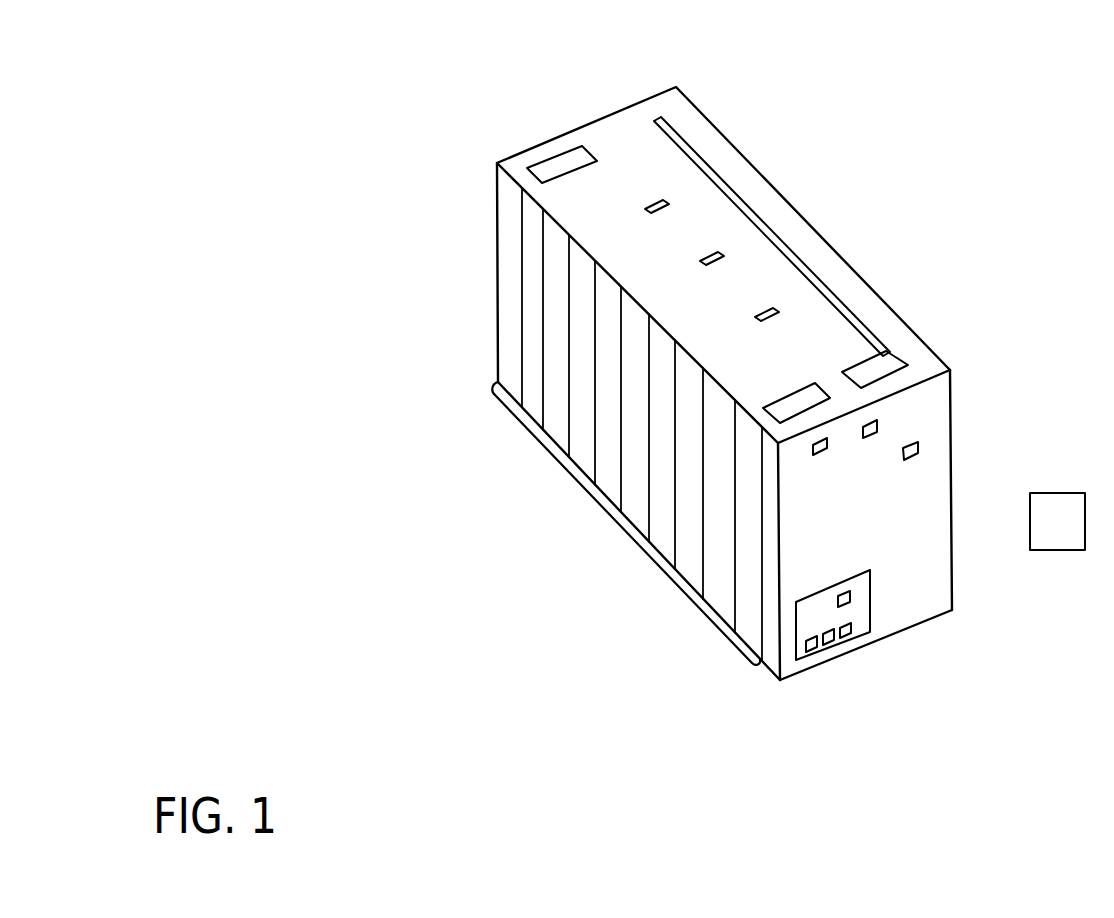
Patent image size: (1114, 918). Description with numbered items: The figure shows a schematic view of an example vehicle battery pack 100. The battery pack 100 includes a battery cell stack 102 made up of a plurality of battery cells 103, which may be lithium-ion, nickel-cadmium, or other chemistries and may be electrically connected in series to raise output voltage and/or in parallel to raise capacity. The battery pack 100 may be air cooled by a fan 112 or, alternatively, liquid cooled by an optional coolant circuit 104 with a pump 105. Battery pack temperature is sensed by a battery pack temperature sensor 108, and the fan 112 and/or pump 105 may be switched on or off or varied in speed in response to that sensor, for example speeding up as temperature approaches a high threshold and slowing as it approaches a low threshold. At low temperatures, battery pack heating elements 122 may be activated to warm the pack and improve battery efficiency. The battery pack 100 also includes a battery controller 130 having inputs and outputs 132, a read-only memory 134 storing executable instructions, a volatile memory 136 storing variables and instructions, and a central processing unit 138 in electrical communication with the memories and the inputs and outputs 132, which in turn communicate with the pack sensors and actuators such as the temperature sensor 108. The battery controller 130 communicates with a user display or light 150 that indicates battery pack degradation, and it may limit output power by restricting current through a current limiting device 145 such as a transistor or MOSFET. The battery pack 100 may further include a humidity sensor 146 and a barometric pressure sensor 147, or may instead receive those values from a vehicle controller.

The battery pack 100 is at (396, 64).
The battery cell stack 102 is at (612, 531).
The battery cells 103 is at (555, 312).
The coolant circuit 104 is at (830, 278).
The pump 105 is at (872, 357).
The battery pack temperature sensor 108 is at (654, 199).
The fan 112 is at (797, 392).
The battery pack heating elements 122 is at (558, 153).
The battery controller 130 is at (858, 574).
The inputs and outputs 132 is at (812, 652).
The read-only memory 134 is at (830, 645).
The volatile memory 136 is at (851, 635).
The central processing unit 138 is at (850, 598).
The current limiting device 145 is at (910, 460).
The humidity sensor 146 is at (820, 455).
The barometric pressure sensor 147 is at (869, 438).
The user display or light 150 is at (872, 569).